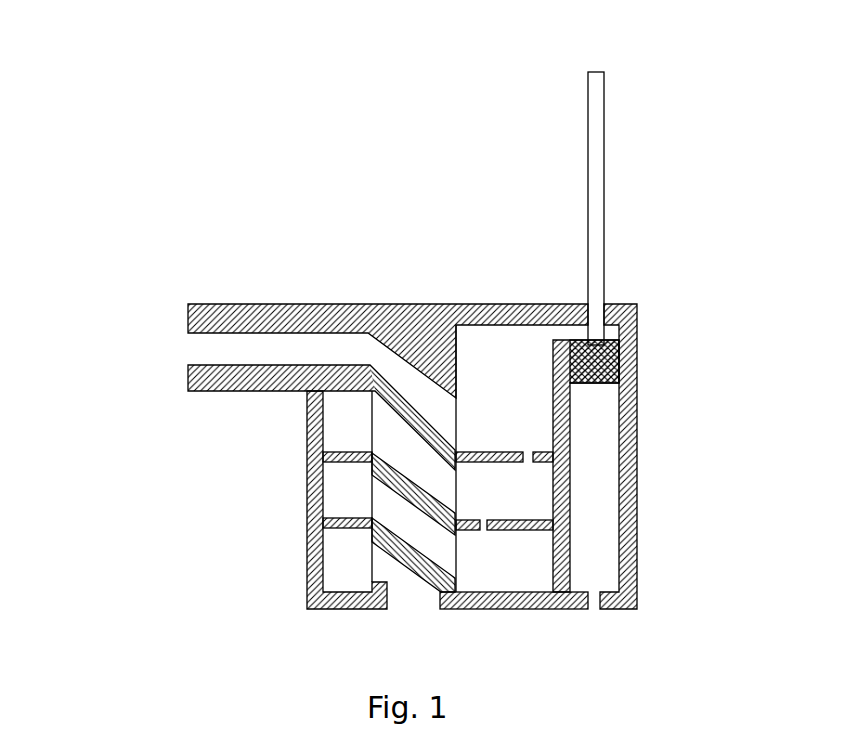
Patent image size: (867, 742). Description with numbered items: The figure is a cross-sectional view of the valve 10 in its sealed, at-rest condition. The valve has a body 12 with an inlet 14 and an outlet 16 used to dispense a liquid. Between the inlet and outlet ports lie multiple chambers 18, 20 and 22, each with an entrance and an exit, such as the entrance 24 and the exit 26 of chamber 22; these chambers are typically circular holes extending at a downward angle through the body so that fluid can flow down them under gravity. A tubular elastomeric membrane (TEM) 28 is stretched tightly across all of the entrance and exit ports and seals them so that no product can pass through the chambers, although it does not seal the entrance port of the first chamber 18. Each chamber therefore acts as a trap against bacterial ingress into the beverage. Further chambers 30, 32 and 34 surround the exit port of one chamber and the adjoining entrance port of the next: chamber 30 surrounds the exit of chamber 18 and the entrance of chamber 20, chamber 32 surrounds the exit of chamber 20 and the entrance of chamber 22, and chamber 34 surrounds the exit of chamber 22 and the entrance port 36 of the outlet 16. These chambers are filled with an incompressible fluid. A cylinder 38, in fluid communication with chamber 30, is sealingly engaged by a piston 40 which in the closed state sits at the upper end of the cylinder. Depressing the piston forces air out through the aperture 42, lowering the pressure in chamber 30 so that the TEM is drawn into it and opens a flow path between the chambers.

The valve 10 is at (250, 229).
The body 12 is at (343, 322).
The inlet 14 is at (177, 347).
The outlet 16 is at (413, 617).
The first chamber 18 is at (400, 382).
The chamber 20 is at (390, 438).
The chamber 22 is at (415, 535).
The entrance 24 is at (373, 490).
The exit 26 is at (525, 610).
The tubular elastomeric membrane (TEM) 28 is at (476, 485).
The chamber 30 is at (590, 450).
The chamber 32 is at (520, 518).
The chamber 34 is at (517, 542).
The entrance port 36 is at (367, 563).
The cylinder 38 is at (497, 408).
The piston 40 is at (593, 148).
The aperture 42 is at (592, 612).